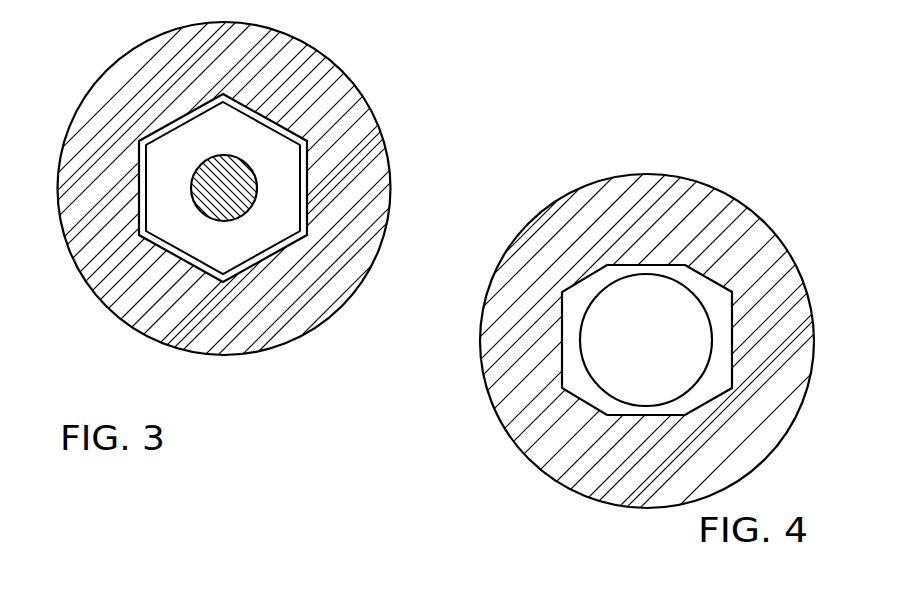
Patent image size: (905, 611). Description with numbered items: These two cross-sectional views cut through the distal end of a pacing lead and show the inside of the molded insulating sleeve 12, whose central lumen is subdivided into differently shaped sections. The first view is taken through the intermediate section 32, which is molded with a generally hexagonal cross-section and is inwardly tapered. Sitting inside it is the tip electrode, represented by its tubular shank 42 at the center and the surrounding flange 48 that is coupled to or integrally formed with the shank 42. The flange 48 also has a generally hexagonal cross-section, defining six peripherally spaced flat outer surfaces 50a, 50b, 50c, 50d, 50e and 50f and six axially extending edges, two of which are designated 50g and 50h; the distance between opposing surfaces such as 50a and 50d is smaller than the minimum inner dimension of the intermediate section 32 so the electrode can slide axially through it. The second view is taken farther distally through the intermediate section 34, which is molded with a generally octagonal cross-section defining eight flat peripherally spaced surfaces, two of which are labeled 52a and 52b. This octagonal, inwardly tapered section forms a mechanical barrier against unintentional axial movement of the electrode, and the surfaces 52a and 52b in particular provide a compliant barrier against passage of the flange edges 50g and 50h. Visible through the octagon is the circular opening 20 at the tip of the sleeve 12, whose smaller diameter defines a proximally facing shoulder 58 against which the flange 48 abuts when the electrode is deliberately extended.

In FIG. 3, the insulating sleeve 12 is at (386, 138).
In FIG. 4, the insulating sleeve 12 is at (695, 178).
In FIG. 4, the opening 20 is at (600, 345).
In FIG. 3, the intermediate section 32 is at (290, 83).
In FIG. 4, the intermediate section 34 is at (710, 240).
In FIG. 3, the tubular shank 42 is at (247, 195).
In FIG. 3, the flange 48 is at (290, 196).
In FIG. 3, the flat outer surface 50a is at (193, 100).
In FIG. 3, the flat outer surface 50b is at (304, 132).
In FIG. 3, the flat outer surface 50c is at (310, 185).
In FIG. 3, the flat outer surface 50d is at (267, 257).
In FIG. 3, the flat outer surface 50e is at (188, 257).
In FIG. 3, the flat outer surface 50f is at (147, 205).
In FIG. 3, the axially extending edge 50g is at (225, 96).
In FIG. 3, the axially extending edge 50h is at (223, 282).
In FIG. 4, the flat surface 52a is at (622, 264).
In FIG. 4, the flat surface 52b is at (633, 415).
In FIG. 4, the proximally facing shoulder 58 is at (730, 340).